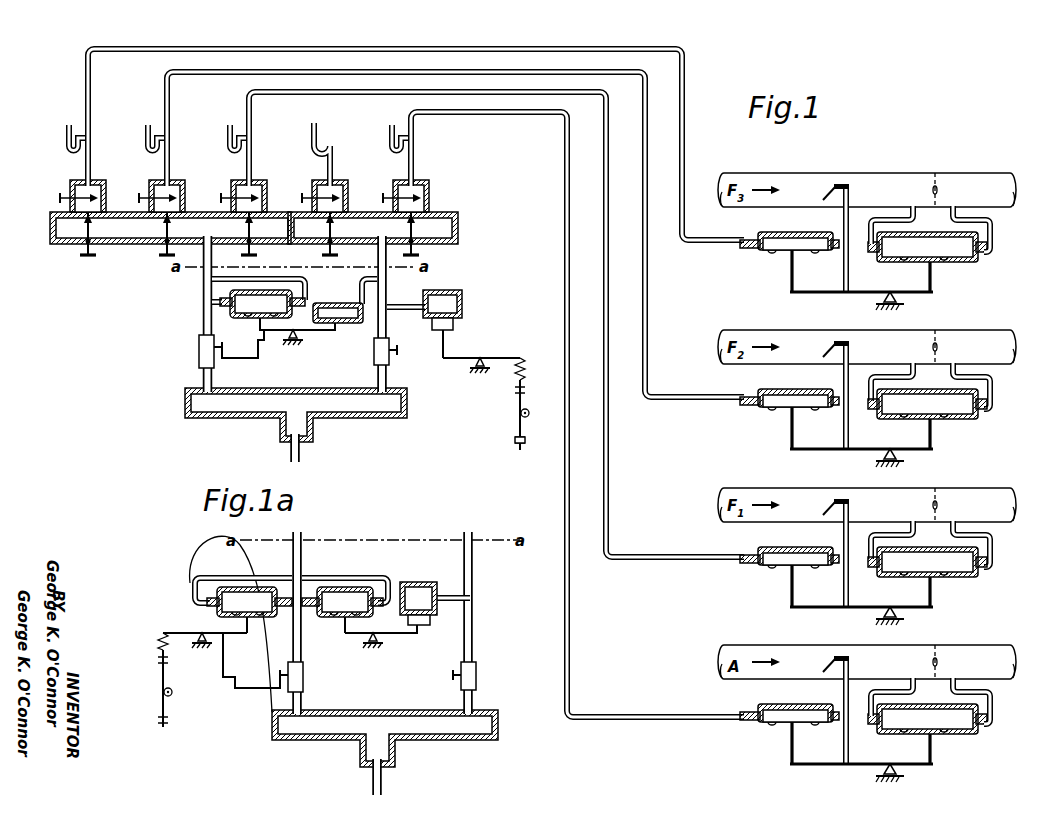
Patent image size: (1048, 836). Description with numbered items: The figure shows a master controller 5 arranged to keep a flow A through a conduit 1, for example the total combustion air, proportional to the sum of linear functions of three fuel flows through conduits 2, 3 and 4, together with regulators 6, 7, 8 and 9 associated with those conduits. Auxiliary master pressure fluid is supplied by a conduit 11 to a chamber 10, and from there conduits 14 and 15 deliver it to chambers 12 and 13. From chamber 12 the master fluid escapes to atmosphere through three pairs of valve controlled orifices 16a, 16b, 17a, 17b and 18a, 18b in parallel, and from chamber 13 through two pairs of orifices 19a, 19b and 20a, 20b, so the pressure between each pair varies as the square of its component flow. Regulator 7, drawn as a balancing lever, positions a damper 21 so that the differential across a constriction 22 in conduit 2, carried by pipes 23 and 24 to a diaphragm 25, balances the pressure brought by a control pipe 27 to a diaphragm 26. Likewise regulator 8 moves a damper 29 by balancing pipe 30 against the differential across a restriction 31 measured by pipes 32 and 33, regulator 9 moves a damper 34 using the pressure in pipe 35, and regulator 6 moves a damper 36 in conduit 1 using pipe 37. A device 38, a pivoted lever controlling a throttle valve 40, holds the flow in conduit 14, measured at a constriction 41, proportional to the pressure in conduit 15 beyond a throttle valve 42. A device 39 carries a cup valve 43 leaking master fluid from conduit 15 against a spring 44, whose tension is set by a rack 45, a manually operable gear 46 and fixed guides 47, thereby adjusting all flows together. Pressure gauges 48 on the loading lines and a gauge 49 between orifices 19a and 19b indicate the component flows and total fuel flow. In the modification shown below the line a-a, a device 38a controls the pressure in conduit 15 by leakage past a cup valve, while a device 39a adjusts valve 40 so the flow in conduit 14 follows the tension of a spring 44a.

In FIG. 1, the conduit 1 is at (867, 654).
In FIG. 1, the conduit 2 is at (867, 494).
In FIG. 1, the conduit 3 is at (867, 335).
In FIG. 1, the conduit 4 is at (986, 173).
In FIG. 1, the master controller 5 is at (247, 319).
In FIG. 1, the regulator 6 is at (861, 781).
In FIG. 1, the regulator 7 is at (861, 602).
In FIG. 1, the regulator 8 is at (861, 439).
In FIG. 1, the regulator 9 is at (817, 292).
In FIG. 1, the chamber 10 is at (296, 415).
In FIG. 1, the conduit 11 is at (301, 453).
In FIG. 1, the chamber 12 is at (170, 228).
In FIG. 1, the chamber 13 is at (373, 228).
In FIG. 1, the conduit 14 is at (201, 322).
In FIG. 1A, the conduit 14 is at (303, 648).
In FIG. 1, the conduit 15 is at (388, 330).
In FIG. 1A, the conduit 15 is at (474, 618).
In FIG. 1, the valve controlled orifice 16a is at (85, 216).
In FIG. 1, the valve controlled orifice 16b is at (106, 196).
In FIG. 1, the valve controlled orifice 17a is at (163, 216).
In FIG. 1, the valve controlled orifice 17b is at (186, 196).
In FIG. 1, the valve controlled orifice 18a is at (253, 232).
In FIG. 1, the valve controlled orifice 18b is at (268, 196).
In FIG. 1, the valve controlled orifice 19a is at (333, 240).
In FIG. 1, the valve controlled orifice 19b is at (349, 196).
In FIG. 1, the valve controlled orifice 20a is at (415, 225).
In FIG. 1, the valve controlled orifice 20b is at (430, 197).
In FIG. 1, the damper 21 is at (835, 534).
In FIG. 1, the constriction 22 is at (926, 491).
In FIG. 1, the pipe 23 is at (859, 540).
In FIG. 1, the pipe 24 is at (990, 544).
In FIG. 1, the diaphragm 25 is at (929, 577).
In FIG. 1, the diaphragm 26 is at (779, 577).
In FIG. 1, the control pipe 27 is at (253, 125).
In FIG. 1, the damper 29 is at (829, 377).
In FIG. 1, the pipe 30 is at (171, 95).
In FIG. 1, the restriction 31 is at (944, 331).
In FIG. 1, the pipe 32 is at (858, 382).
In FIG. 1, the pipe 33 is at (948, 406).
In FIG. 1, the damper 34 is at (840, 182).
In FIG. 1, the pipe 35 is at (93, 92).
In FIG. 1, the damper 36 is at (830, 696).
In FIG. 1, the pipe 37 is at (438, 116).
In FIG. 1, the device 38 is at (300, 338).
In FIG. 1A, the device 38a is at (390, 636).
In FIG. 1, the device 39 is at (478, 352).
In FIG. 1A, the device 39a is at (175, 632).
In FIG. 1, the throttle valve 40 is at (198, 361).
In FIG. 1A, the throttle valve 40 is at (304, 677).
In FIG. 1, the constriction 41 is at (207, 289).
In FIG. 1, the throttle valve 42 is at (390, 362).
In FIG. 1A, the throttle valve 42 is at (477, 683).
In FIG. 1, the cup valve 43 is at (463, 320).
In FIG. 1, the spring 44 is at (522, 364).
In FIG. 1A, the spring 44a is at (160, 636).
In FIG. 1, the rack 45 is at (517, 405).
In FIG. 1, the gear 46 is at (521, 414).
In FIG. 1, the fixed guides 47 is at (514, 443).
In FIG. 1, the pressure gauge 48 is at (66, 136).
In FIG. 1A, the pressure gauge 48 is at (428, 625).
In FIG. 1, the gauge 49 is at (315, 127).